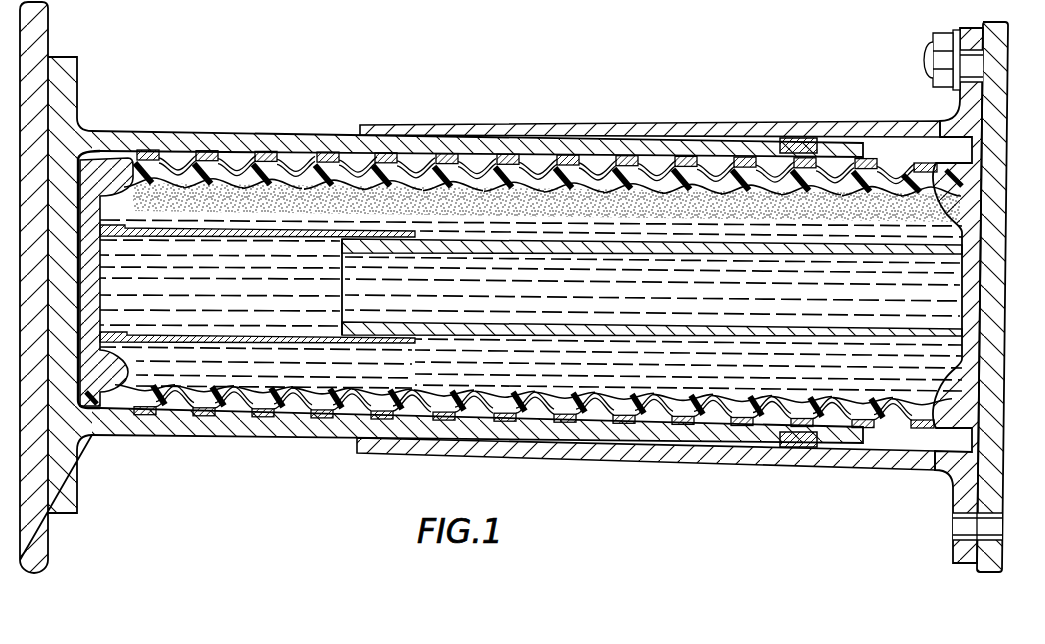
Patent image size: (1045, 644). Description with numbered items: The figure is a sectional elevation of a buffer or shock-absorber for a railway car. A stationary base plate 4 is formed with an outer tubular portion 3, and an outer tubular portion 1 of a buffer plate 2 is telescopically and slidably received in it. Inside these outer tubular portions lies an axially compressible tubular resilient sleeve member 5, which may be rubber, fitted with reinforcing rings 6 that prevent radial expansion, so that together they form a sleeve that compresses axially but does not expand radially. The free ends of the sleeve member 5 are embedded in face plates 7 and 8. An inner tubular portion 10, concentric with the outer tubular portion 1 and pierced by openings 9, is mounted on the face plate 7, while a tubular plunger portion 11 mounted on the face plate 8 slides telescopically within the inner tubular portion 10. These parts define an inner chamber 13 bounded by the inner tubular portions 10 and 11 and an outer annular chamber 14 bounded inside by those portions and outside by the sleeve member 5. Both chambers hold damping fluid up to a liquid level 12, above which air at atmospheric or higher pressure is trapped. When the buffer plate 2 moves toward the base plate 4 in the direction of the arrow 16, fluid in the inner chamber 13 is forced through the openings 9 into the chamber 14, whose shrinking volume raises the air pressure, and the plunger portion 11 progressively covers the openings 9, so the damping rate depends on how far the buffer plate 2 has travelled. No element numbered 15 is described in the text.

The outer tubular portion 1 is at (143, 428).
The buffer plate 2 is at (43, 553).
The outer tubular portion 3 is at (520, 441).
The stationary base plate 4 is at (990, 483).
The tubular resilient sleeve member 5 is at (400, 398).
The reinforcing rings 6 is at (470, 404).
The face plate 7 is at (82, 288).
The face plate 8 is at (970, 293).
The openings 9 is at (240, 334).
The inner tubular portion 10 is at (185, 333).
The tubular plunger portion 11 is at (535, 328).
The liquid level 12 is at (598, 218).
The inner chamber 13 is at (943, 283).
The outer annular chamber 14 is at (685, 197).
The granular insulation layer 15 is at (490, 195).
The arrow 16 is at (142, 117).